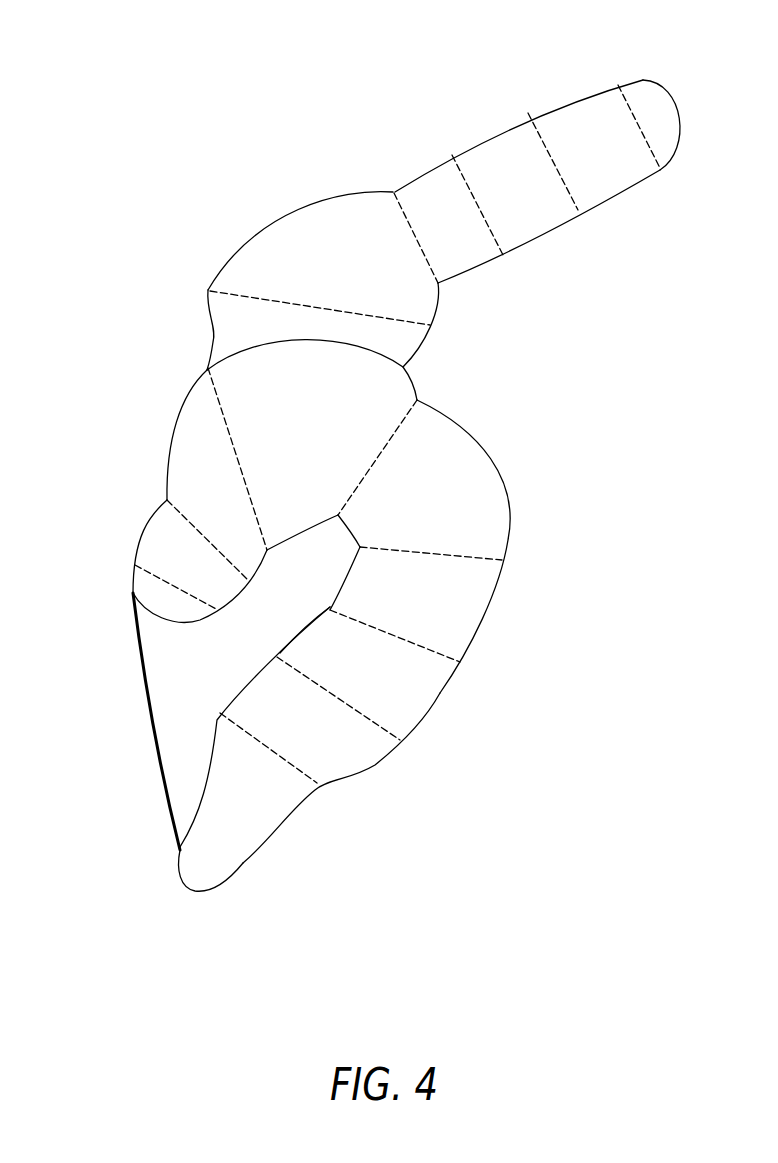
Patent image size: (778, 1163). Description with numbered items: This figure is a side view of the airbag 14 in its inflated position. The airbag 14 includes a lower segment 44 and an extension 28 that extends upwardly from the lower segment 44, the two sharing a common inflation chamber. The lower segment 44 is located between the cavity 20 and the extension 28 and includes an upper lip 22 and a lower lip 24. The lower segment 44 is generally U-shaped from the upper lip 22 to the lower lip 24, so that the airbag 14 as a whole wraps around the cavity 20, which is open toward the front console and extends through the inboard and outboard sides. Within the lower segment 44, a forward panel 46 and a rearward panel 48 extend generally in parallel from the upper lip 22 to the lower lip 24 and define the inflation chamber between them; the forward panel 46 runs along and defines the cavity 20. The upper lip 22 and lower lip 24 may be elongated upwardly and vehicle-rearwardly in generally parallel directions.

The airbag 14 is at (280, 183).
The extension 28 is at (647, 80).
The lower segment 44 is at (519, 424).
The upper lip 22 is at (205, 515).
The cavity 20 is at (205, 662).
The lower lip 24 is at (205, 858).
The forward panel 46 is at (303, 632).
The rearward panel 48 is at (482, 623).